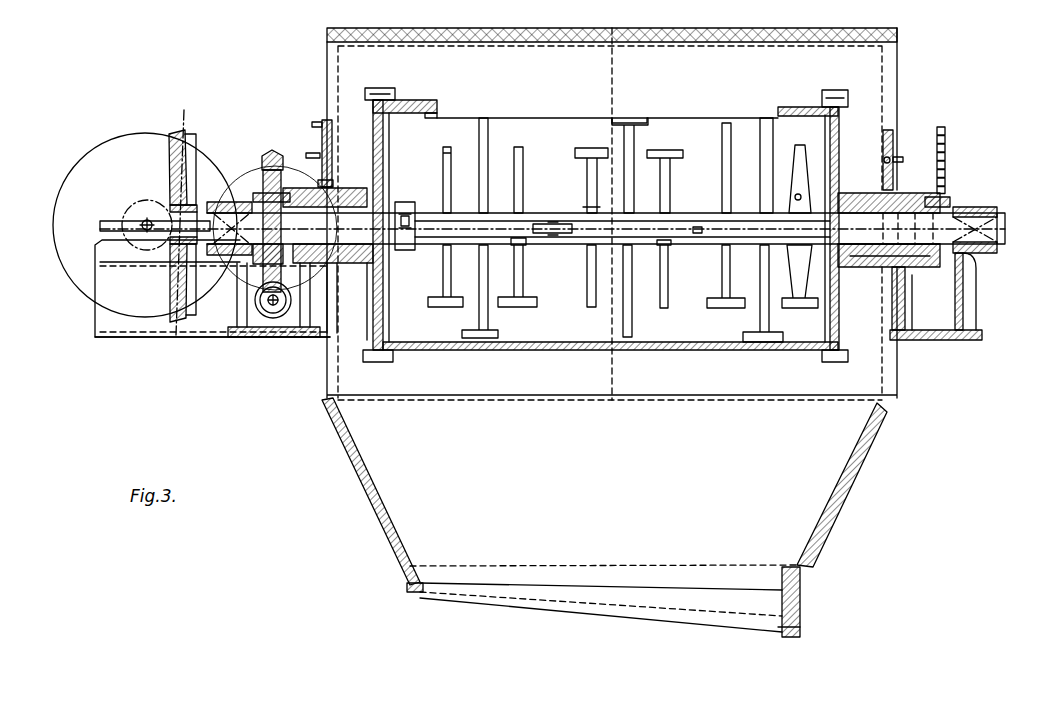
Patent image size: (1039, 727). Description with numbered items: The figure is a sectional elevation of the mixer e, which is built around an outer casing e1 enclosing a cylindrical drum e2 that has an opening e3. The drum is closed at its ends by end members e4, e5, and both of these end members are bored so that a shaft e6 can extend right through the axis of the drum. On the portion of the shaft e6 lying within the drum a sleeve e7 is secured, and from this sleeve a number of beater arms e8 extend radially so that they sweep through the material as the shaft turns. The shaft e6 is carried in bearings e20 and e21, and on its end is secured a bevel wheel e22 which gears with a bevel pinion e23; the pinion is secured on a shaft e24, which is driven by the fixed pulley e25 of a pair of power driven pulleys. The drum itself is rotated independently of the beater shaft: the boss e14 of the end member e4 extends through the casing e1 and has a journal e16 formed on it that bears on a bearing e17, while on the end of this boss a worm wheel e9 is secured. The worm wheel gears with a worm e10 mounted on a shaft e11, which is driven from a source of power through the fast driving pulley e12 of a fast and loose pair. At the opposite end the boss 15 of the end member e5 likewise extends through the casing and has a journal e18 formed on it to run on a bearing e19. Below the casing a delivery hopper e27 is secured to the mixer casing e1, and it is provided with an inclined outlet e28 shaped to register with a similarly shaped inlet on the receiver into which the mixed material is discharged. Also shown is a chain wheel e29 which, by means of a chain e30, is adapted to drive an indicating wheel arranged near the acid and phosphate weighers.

The mixer e is at (420, 105).
The outer casing e1 is at (413, 28).
The cylindrical drum e2 is at (557, 350).
The opening e3 is at (437, 113).
The end member of the drum e4 is at (373, 133).
The end member of the drum e5 is at (838, 140).
The shaft e6 is at (207, 214).
The sleeve e7 is at (457, 212).
The beater arms e8 is at (451, 166).
The worm wheel e9 is at (263, 176).
The worm e10 is at (258, 303).
The shaft e11 is at (273, 306).
The fast driving pulley e12 is at (235, 163).
The boss e14 is at (353, 193).
The boss 15 is at (900, 163).
The journal e16 is at (320, 166).
The bearing e17 is at (312, 295).
The journal e18 is at (895, 193).
The bearing e19 is at (890, 268).
The bearing e20 is at (253, 193).
The bearing e21 is at (973, 206).
The bevel wheel e22 is at (172, 133).
The bevel pinion e23 is at (142, 198).
The shaft e24 is at (140, 225).
The fixed pulley e25 is at (77, 167).
The delivery hopper e27 is at (833, 513).
The inclined outlet e28 is at (595, 610).
The chain wheel e29 is at (948, 193).
The chain e30 is at (945, 130).